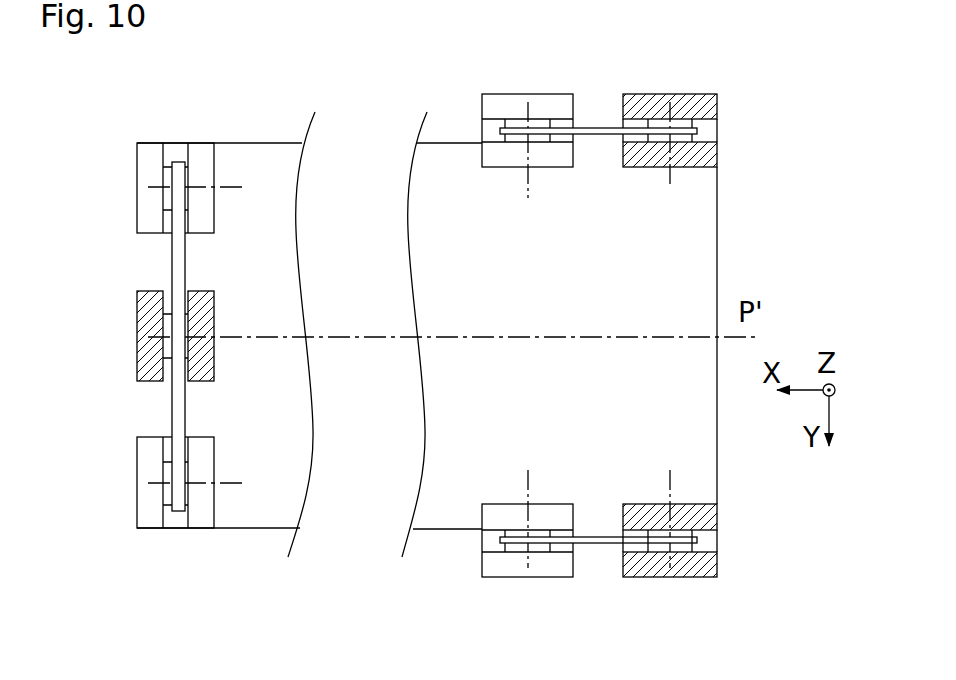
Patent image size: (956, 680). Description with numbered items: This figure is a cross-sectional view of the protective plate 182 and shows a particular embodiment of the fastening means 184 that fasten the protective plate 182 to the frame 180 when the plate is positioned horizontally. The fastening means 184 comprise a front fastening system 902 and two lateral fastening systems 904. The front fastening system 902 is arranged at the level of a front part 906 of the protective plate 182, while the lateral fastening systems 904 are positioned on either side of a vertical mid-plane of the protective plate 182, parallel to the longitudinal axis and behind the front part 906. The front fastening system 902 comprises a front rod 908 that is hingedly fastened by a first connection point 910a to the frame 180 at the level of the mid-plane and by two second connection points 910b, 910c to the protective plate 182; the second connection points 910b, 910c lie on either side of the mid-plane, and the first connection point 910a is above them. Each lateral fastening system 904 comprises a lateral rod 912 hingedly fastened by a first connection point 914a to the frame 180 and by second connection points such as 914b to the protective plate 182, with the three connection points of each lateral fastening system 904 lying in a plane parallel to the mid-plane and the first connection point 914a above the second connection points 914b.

The frame 180 is at (703, 516).
The protective plate 182 is at (437, 518).
The fastening means 184 is at (637, 382).
The front fastening system 902 is at (174, 383).
The lateral fastening system 904 is at (650, 382).
The front part 906 is at (187, 525).
The front rod 908 is at (177, 423).
The first connection point 910a is at (168, 338).
The second connection point 910b is at (173, 482).
The second connection point 910c is at (168, 188).
The lateral rod 912 is at (603, 542).
The first connection point 914a is at (673, 127).
The second connection point 914b is at (528, 560).